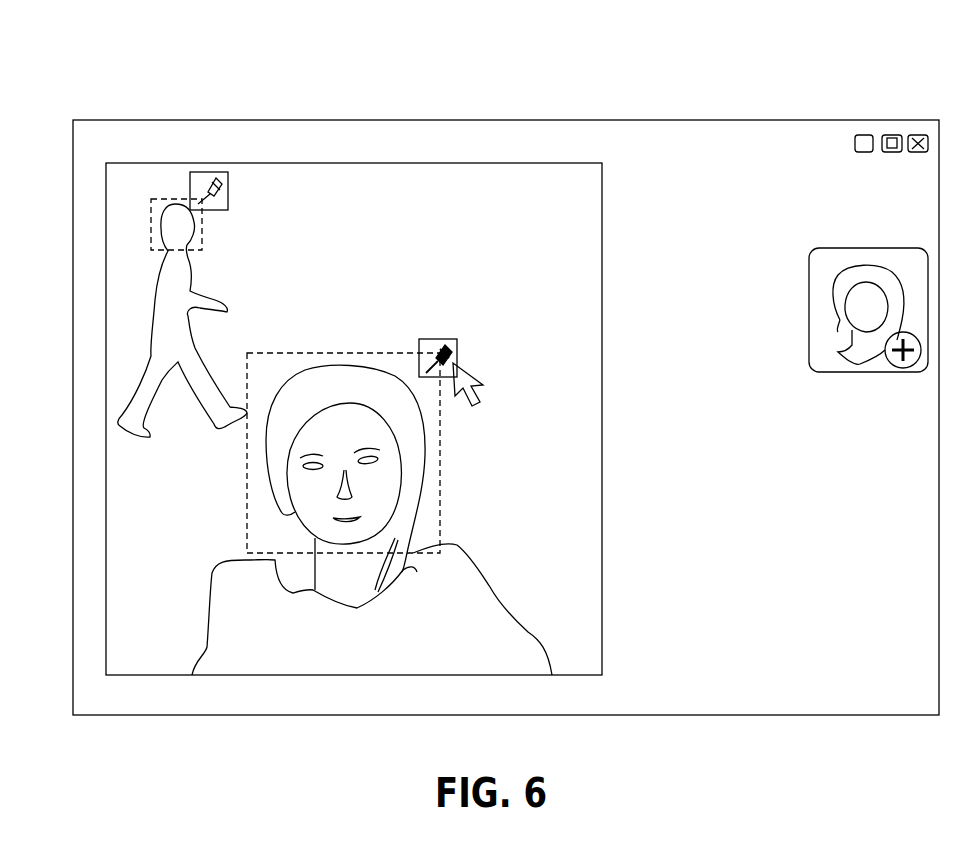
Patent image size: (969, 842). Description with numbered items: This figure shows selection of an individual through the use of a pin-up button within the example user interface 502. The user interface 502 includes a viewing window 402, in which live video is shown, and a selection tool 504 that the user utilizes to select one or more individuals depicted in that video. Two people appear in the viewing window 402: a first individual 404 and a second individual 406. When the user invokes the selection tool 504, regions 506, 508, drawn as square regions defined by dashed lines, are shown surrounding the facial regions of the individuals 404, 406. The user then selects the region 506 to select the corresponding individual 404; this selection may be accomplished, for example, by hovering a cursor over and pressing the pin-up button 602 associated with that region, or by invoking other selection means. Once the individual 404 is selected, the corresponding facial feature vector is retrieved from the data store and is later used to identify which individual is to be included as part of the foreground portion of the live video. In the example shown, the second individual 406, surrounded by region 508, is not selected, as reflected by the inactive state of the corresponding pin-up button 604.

The viewing window 402 is at (592, 199).
The individual 404 is at (508, 527).
The second individual 406 is at (226, 256).
The user interface 502 is at (90, 92).
The selection tool 504 is at (728, 224).
The region 506 is at (442, 422).
The region 508 is at (160, 199).
The pin-up button 602 is at (457, 360).
The pin-up button 604 is at (228, 185).